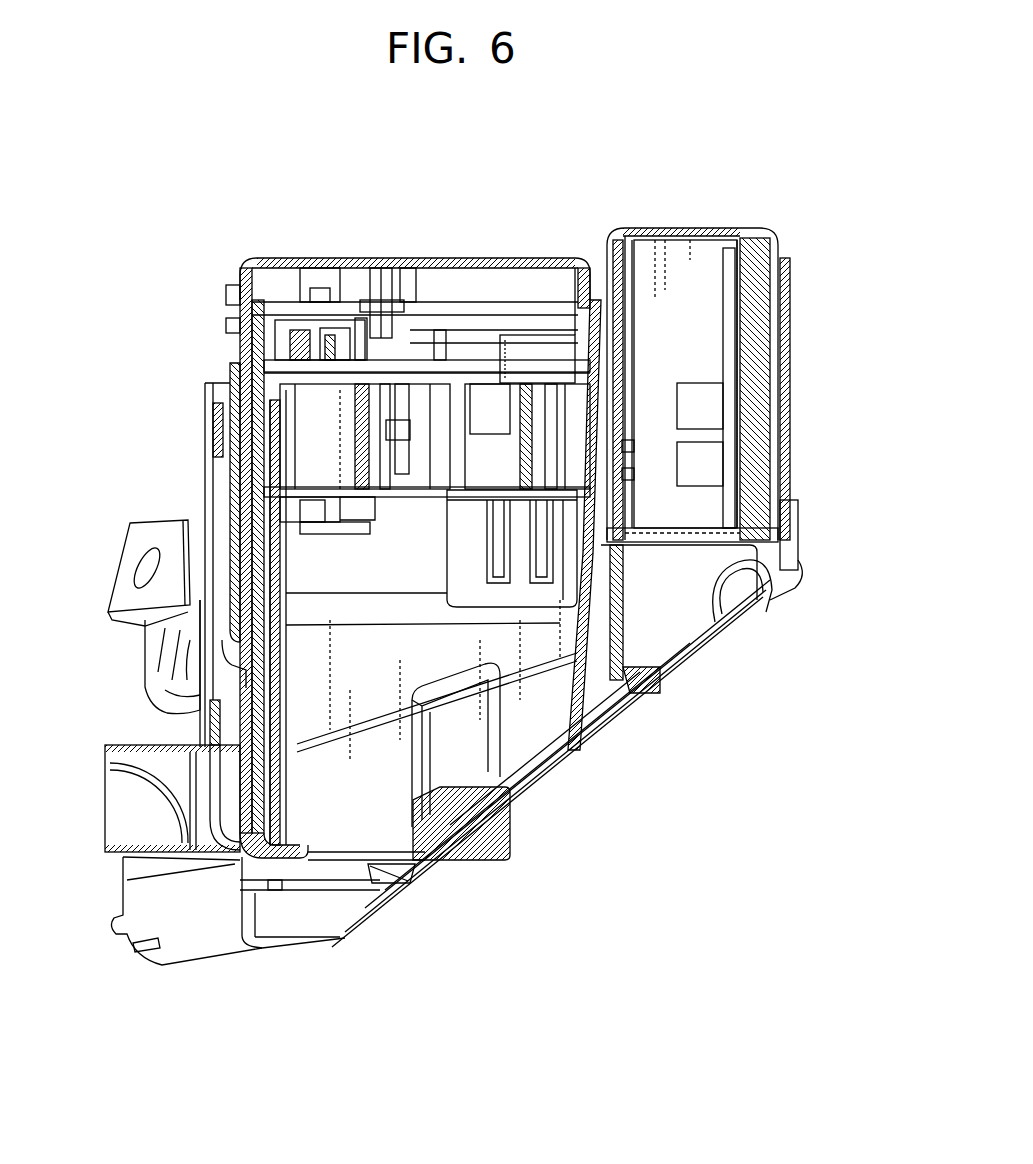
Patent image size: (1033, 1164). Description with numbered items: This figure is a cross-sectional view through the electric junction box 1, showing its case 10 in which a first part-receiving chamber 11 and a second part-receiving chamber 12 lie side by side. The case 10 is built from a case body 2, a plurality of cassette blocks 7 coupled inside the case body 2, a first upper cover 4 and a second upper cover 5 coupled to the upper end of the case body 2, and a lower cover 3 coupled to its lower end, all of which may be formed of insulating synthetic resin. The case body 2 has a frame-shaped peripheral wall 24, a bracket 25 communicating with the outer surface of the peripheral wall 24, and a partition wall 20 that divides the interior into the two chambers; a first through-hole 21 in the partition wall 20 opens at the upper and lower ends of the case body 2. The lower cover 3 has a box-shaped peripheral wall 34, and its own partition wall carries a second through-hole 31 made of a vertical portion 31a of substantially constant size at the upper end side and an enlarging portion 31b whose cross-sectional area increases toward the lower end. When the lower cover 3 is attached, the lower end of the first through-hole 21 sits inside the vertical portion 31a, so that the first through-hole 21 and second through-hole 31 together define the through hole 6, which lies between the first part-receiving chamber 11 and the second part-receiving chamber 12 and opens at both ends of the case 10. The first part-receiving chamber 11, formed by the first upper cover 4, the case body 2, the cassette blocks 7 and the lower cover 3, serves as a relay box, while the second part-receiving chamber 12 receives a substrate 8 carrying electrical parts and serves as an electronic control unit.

The electric junction box 1 is at (760, 104).
The case body 2 is at (236, 400).
The lower cover 3 is at (236, 692).
The first upper cover 4 is at (283, 256).
The second upper cover 5 is at (714, 222).
The through hole 6 is at (600, 700).
The cassette block 7 is at (535, 450).
The substrate 8 is at (728, 314).
The case 10 is at (177, 313).
The first part-receiving chamber 11 is at (486, 316).
The second part-receiving chamber 12 is at (660, 262).
The partition wall 20 is at (635, 450).
The first through-hole 21 is at (604, 475).
The peripheral wall 24 is at (236, 432).
The bracket 25 is at (152, 522).
The second through-hole 31 is at (678, 562).
The vertical portion 31a is at (596, 585).
The enlarging portion 31b is at (612, 642).
The peripheral wall 34 is at (352, 880).